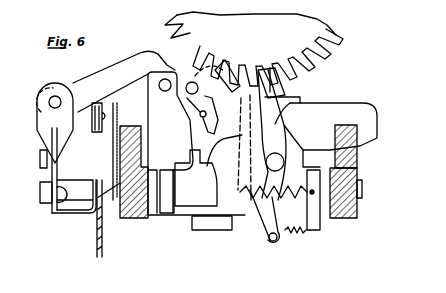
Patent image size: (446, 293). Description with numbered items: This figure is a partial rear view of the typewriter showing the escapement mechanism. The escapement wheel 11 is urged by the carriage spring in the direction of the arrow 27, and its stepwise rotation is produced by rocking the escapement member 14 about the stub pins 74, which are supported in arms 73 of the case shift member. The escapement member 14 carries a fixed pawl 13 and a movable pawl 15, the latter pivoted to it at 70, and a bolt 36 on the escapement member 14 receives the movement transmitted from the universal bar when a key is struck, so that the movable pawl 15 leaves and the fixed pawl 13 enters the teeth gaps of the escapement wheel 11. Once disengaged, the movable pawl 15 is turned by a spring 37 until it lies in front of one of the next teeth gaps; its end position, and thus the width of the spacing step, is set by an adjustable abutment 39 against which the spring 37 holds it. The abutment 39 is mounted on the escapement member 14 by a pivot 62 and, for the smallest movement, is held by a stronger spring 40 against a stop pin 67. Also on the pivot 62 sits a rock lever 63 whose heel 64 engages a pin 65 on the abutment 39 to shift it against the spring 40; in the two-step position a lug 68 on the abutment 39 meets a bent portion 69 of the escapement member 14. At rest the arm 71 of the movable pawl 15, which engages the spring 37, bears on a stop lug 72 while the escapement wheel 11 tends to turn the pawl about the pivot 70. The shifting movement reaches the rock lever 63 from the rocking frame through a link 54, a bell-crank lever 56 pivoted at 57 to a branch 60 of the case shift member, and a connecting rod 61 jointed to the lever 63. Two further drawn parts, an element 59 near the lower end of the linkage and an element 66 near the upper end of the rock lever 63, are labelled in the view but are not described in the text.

The escapement wheel 11 is at (330, 48).
The arrow 27 is at (316, 37).
The fixed pawl 13 is at (290, 94).
The escapement member 14 is at (339, 110).
The movable pawl 15 is at (265, 123).
The bolt 36 is at (275, 73).
The spring 37 is at (300, 236).
The adjustable abutment 39 is at (239, 147).
The spring 40 is at (265, 186).
The link 54 is at (43, 170).
The bell-crank lever arm 56 is at (53, 213).
The pivot 57 is at (72, 188).
The rod 59 is at (97, 248).
The branch 60 is at (107, 160).
The connecting rod 61 is at (43, 129).
The pivot 62 is at (188, 93).
The rock lever 63 is at (115, 73).
The heel 64 is at (209, 121).
The pin 65 is at (201, 117).
The pivot 66 is at (167, 70).
The stop pin 67 is at (158, 88).
The lug 68 is at (181, 192).
The bent portion 69 is at (164, 212).
The pivot 70 is at (281, 156).
The arm 71 is at (262, 233).
The stop lug 72 is at (217, 229).
The arms 73 is at (352, 156).
The stub pins 74 is at (362, 192).